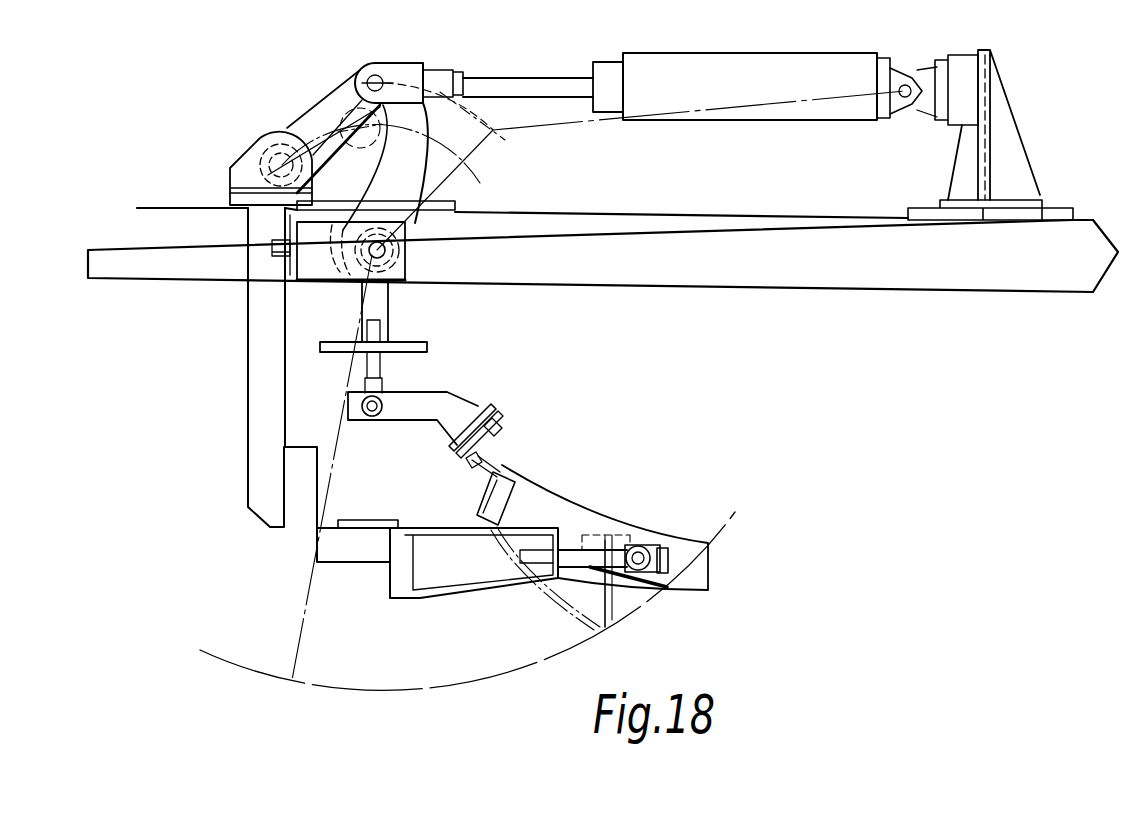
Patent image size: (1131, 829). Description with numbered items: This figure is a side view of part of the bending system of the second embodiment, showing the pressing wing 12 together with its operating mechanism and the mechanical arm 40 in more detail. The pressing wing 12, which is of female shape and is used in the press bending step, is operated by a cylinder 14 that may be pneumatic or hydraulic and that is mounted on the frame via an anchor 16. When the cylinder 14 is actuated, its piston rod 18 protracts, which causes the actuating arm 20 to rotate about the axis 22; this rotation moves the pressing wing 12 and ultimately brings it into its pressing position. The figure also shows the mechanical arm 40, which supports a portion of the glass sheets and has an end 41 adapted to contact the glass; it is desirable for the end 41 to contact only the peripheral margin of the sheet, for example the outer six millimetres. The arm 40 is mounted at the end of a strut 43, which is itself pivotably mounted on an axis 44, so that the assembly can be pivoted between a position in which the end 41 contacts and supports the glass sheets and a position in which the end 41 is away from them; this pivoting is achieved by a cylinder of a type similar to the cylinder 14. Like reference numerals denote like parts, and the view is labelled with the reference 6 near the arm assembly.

The roller arm 6 is at (718, 569).
The pressing wing 12 is at (608, 600).
The cylinder 14 is at (767, 75).
The anchor 16 is at (1002, 140).
The piston rod 18 is at (530, 88).
The actuating arm 20 is at (262, 367).
The axis 22 is at (432, 250).
The axis 44 is at (386, 250).
The mechanical arm 40 is at (432, 402).
The end 41 is at (492, 458).
The strut 43 is at (383, 300).